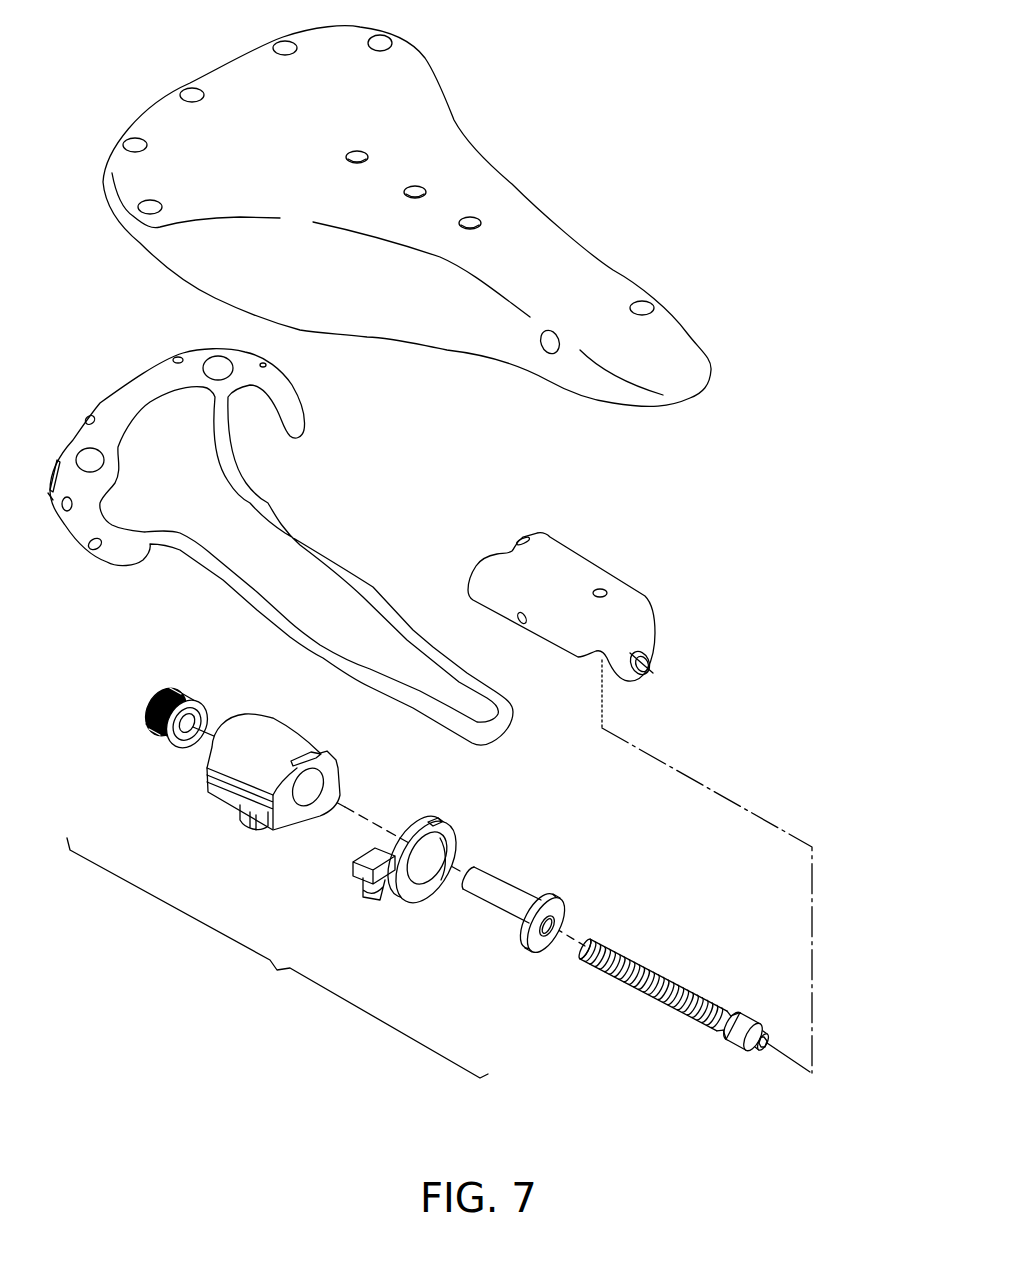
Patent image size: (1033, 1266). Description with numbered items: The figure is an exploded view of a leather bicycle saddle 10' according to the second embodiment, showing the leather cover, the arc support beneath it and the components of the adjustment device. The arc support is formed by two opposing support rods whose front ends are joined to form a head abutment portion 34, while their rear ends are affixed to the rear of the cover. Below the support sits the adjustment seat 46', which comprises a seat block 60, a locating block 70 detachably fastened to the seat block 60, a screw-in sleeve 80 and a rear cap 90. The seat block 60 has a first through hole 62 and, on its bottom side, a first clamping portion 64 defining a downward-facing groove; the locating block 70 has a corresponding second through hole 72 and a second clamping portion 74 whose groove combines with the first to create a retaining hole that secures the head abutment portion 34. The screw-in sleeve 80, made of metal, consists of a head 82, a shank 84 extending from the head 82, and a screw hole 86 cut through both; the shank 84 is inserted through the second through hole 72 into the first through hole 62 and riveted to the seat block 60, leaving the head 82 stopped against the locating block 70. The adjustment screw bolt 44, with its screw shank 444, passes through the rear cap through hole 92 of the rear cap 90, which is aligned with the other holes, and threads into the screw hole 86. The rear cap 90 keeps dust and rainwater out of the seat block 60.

The leather bicycle saddle 10' is at (425, 204).
The head abutment portion 34 is at (497, 723).
The adjustment screw bolt 44 is at (674, 983).
The screw shank 444 is at (658, 980).
The adjustment seat 46' is at (277, 958).
The seat block 60 is at (243, 827).
The first through hole 62 is at (304, 795).
The first clamping portion 64 is at (240, 818).
The locating block 70 is at (396, 906).
The second through hole 72 is at (431, 862).
The second clamping portion 74 is at (361, 892).
The screw-in sleeve 80 is at (544, 938).
The head 82 is at (568, 902).
The shank 84 is at (497, 910).
The screw hole 86 is at (547, 936).
The rear cap 90 is at (157, 745).
The rear cap through hole 92 is at (187, 728).